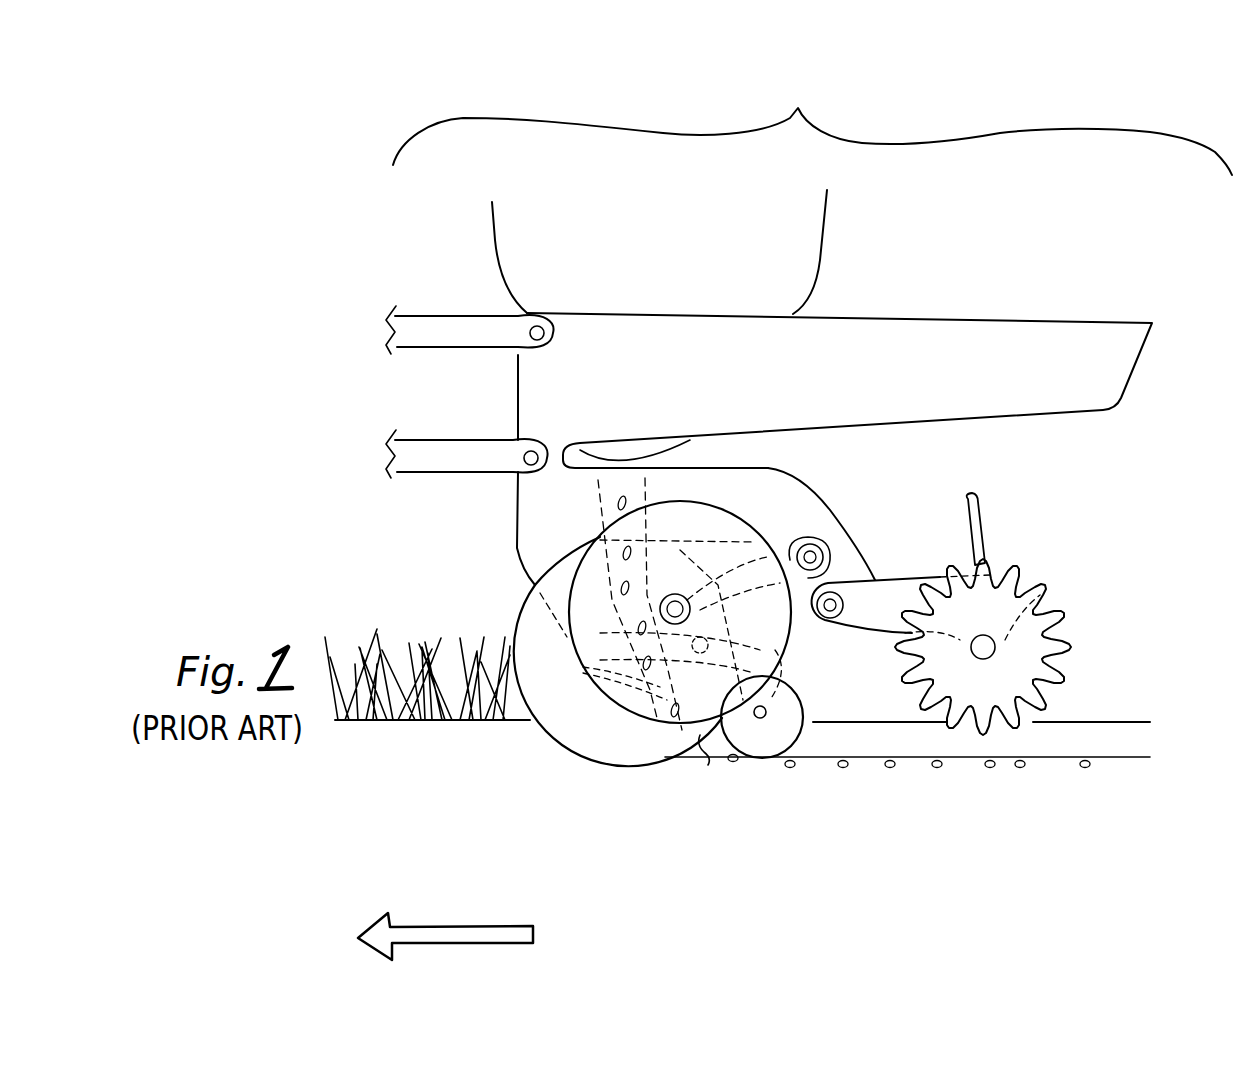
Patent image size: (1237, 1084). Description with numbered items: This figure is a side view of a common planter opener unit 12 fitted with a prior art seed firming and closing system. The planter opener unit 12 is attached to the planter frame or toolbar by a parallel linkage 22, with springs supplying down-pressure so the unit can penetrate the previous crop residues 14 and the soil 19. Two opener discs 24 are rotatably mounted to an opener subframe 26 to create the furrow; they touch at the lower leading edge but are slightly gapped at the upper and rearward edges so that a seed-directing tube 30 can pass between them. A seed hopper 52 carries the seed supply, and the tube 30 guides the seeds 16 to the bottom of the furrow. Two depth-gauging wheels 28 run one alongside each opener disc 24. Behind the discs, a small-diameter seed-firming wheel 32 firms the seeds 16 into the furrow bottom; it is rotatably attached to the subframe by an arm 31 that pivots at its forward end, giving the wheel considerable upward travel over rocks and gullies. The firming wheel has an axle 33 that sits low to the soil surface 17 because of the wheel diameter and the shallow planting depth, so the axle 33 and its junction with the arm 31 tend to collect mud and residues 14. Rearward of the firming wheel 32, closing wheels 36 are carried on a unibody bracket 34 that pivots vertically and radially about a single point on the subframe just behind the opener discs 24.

The planter opener unit 12 is at (812, 270).
The seed hopper 52 is at (489, 242).
The parallel linkage 22 is at (420, 352).
The opener subframe 26 is at (842, 506).
The unibody bracket 34 is at (898, 572).
The closing wheels 36 is at (1070, 690).
The seed-directing tube 30 is at (614, 490).
The depth-gauging wheels 28 is at (606, 709).
The opener discs 24 is at (548, 737).
The arm 31 is at (792, 673).
The seed-firming wheel 32 is at (808, 748).
The axle 33 is at (764, 726).
The seeds 16 is at (728, 760).
The soil surface 17 is at (1158, 729).
The soil 19 is at (390, 743).
The previous crop residues 14 is at (384, 626).